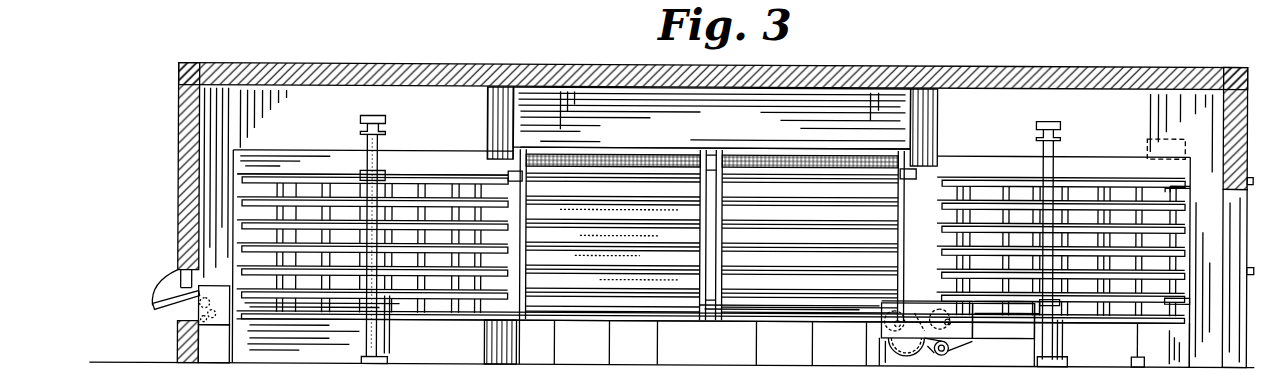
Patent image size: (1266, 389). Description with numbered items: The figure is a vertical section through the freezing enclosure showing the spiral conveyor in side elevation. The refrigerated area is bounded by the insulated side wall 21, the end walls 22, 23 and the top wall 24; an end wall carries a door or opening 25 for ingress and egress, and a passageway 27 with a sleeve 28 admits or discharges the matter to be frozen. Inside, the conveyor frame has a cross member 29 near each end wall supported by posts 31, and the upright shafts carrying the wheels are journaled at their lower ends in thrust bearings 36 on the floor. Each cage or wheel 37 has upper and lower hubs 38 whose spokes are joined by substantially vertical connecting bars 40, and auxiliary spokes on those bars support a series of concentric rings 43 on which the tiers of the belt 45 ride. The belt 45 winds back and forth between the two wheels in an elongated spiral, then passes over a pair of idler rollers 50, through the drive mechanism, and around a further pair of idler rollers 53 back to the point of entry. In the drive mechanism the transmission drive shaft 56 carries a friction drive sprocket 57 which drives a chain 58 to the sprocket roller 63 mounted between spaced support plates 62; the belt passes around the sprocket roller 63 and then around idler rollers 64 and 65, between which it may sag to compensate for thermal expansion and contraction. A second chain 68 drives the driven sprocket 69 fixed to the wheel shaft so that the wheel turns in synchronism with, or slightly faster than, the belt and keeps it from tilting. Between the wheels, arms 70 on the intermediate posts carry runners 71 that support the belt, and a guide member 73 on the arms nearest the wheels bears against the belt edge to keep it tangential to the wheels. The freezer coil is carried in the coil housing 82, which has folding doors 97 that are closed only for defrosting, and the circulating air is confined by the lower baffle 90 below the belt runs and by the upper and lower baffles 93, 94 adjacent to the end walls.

The insulated side wall 21 is at (816, 85).
The end wall 22 is at (1228, 122).
The end wall 23 is at (178, 204).
The top wall 24 is at (895, 55).
The door or opening 25 is at (1232, 219).
The passageway 27 is at (1158, 140).
The sleeve 28 is at (154, 298).
The cross member 29 is at (372, 117).
The post 31 is at (367, 160).
The thrust bearing 36 is at (362, 360).
The cage or wheel 37 is at (433, 140).
The hub 38 is at (380, 176).
The connecting bar 40 is at (340, 232).
The concentric ring 43 is at (250, 185).
The belt 45 is at (784, 185).
The idler roller 50 is at (208, 286).
The idler roller 53 is at (1180, 190).
The drive shaft 56 is at (950, 349).
The friction drive sprocket 57 is at (950, 345).
The chain 58 is at (925, 362).
The support plate 62 is at (882, 318).
The sprocket roller 63 is at (880, 302).
The idler roller 64 is at (882, 338).
The idler roller 65 is at (973, 318).
The chain 68 is at (1012, 312).
The driven sprocket 69 is at (1060, 302).
The arm 70 is at (526, 198).
The runner 71 is at (665, 200).
The guide member 73 is at (508, 175).
The coil housing 82 is at (627, 146).
The lower baffle 90 is at (700, 368).
The upper baffle 93 is at (487, 104).
The lower baffle 94 is at (485, 345).
The folding door 97 is at (716, 150).